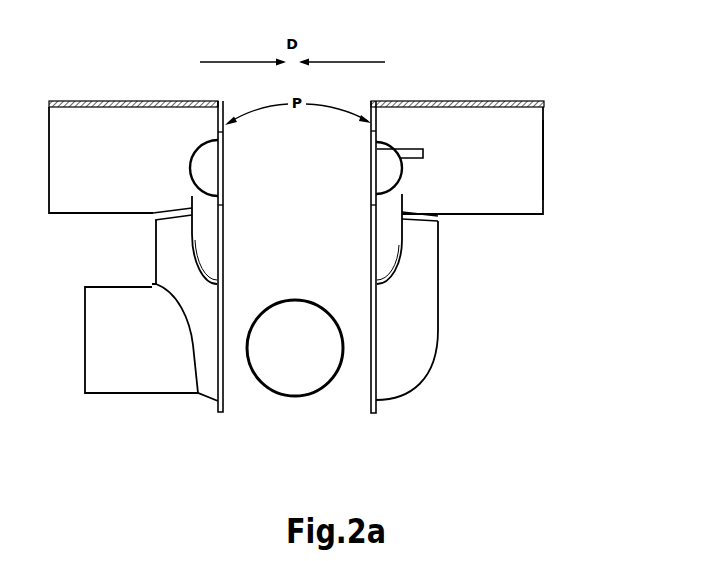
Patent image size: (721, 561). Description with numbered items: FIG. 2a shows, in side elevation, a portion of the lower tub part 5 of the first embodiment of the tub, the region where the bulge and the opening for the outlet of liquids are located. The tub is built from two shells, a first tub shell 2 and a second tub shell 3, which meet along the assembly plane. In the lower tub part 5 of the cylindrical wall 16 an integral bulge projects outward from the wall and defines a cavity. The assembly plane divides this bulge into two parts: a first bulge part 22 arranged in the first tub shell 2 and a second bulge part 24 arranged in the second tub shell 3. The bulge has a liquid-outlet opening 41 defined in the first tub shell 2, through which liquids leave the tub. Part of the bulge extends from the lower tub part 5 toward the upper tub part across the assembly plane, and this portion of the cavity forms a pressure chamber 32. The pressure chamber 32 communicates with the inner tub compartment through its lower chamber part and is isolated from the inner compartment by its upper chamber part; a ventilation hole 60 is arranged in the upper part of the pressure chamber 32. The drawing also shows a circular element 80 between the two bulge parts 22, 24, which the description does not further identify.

The first tub shell 2 is at (132, 133).
The second tub shell 3 is at (482, 124).
The lower tub part 5 is at (489, 214).
The cylindrical wall 16 is at (550, 152).
The first bulge part 22 is at (205, 353).
The second bulge part 24 is at (410, 358).
The pressure chamber 32 is at (203, 259).
The outlet opening 41 is at (84, 348).
The ventilation hole 60 is at (412, 155).
The ball 80 is at (307, 377).